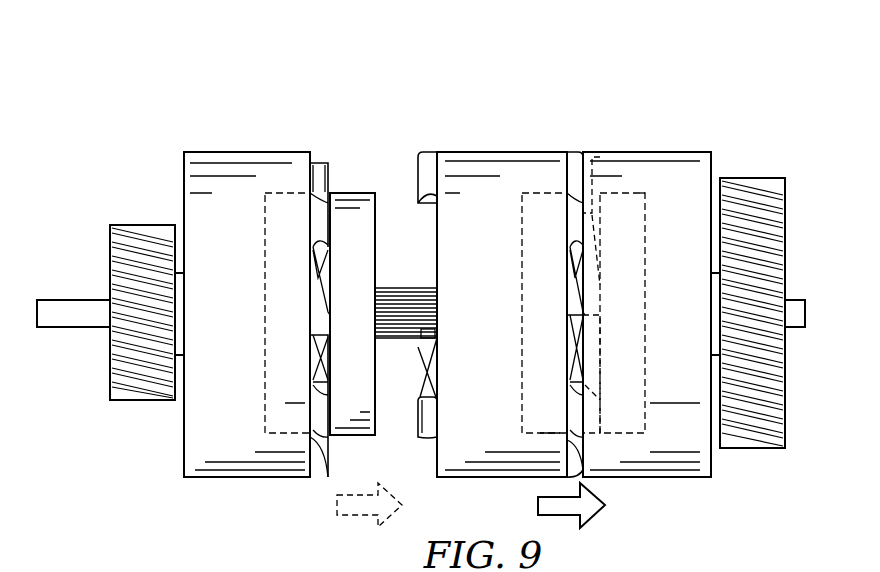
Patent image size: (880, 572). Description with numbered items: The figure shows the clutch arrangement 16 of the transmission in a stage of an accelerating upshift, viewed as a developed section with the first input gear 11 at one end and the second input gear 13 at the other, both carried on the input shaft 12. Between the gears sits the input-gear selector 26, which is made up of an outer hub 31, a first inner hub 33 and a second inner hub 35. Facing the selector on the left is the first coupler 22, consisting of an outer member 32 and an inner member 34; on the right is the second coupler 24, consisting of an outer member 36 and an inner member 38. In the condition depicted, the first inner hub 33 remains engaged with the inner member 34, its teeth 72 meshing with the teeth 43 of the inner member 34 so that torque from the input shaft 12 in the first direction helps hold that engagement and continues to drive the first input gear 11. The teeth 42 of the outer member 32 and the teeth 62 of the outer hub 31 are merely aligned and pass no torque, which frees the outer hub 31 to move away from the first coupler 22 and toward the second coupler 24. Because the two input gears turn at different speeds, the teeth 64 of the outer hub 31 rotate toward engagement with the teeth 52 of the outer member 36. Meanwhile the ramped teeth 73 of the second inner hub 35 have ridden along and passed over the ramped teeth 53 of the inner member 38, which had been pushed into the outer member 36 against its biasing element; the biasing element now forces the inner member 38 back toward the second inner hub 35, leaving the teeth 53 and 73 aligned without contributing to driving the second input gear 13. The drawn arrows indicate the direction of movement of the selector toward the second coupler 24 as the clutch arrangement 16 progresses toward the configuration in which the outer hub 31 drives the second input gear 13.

The clutch arrangement 16 is at (105, 88).
The first input gear 11 is at (138, 218).
The input shaft 12 is at (68, 290).
The second input gear 13 is at (752, 178).
The first coupler 22 is at (238, 138).
The second coupler 24 is at (677, 150).
The input-gear selector 26 is at (497, 140).
The outer hub 31 is at (462, 150).
The outer member 32 is at (180, 160).
The first inner hub 33 is at (383, 190).
The inner member 34 is at (262, 215).
The second inner hub 35 is at (522, 190).
The outer member 36 is at (700, 150).
The inner member 38 is at (637, 190).
The teeth 42 is at (320, 160).
The teeth 43 is at (303, 208).
The teeth 52 is at (577, 150).
The teeth 53 is at (592, 200).
The teeth 62 is at (427, 150).
The teeth 64 is at (563, 170).
The teeth 72 is at (367, 192).
The teeth 73 is at (565, 215).